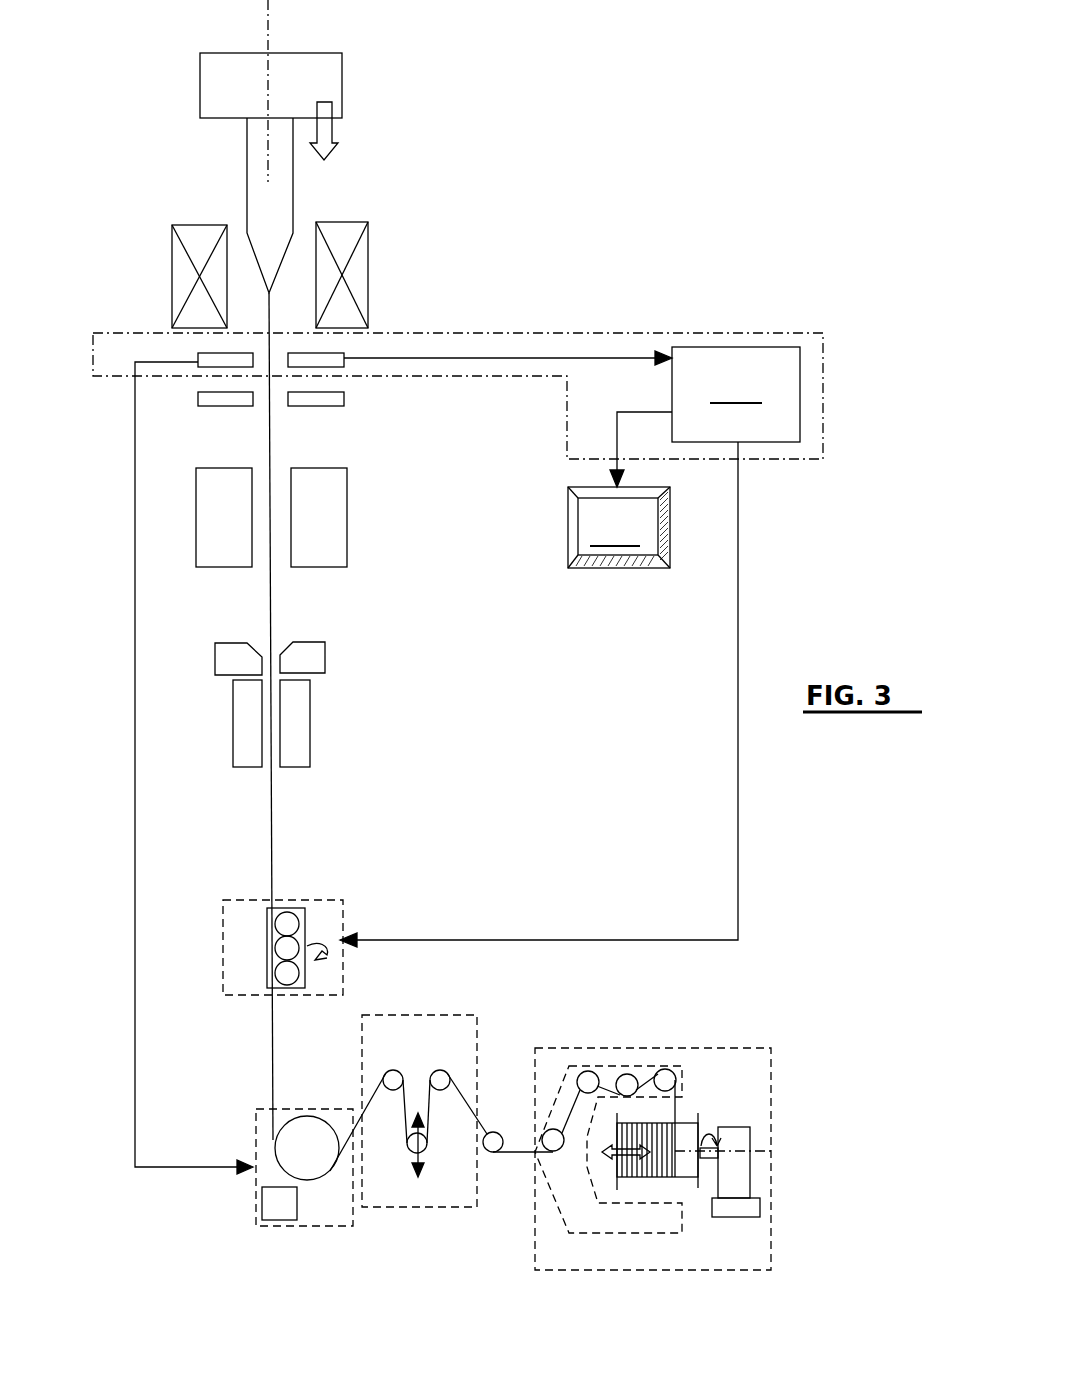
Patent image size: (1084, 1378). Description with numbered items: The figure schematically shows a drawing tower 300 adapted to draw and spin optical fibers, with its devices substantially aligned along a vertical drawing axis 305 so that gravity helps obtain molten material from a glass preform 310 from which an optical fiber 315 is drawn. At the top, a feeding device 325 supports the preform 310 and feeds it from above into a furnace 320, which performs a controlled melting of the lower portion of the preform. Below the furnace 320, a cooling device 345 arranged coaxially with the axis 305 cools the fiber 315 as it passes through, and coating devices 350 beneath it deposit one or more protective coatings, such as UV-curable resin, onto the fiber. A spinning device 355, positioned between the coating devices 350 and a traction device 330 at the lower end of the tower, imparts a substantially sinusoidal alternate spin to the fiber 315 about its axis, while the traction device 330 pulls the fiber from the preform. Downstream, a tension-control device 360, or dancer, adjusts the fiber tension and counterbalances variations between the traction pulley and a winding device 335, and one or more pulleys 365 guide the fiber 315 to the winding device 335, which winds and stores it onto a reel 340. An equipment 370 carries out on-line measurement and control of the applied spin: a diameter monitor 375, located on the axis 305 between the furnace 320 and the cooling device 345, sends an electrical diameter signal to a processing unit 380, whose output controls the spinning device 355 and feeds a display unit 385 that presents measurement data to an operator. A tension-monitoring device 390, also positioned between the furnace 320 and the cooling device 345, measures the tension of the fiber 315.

The drawing tower 300 is at (774, 145).
The vertical drawing axis 305 is at (268, 25).
The glass preform 310 is at (272, 205).
The optical fiber 315 is at (272, 445).
The furnace 320 is at (357, 292).
The feeding device 325 is at (340, 85).
The traction device 330 is at (256, 1109).
The winding device 335 is at (753, 1048).
The reel 340 is at (692, 1170).
The cooling device 345 is at (347, 507).
The coating devices 350 is at (327, 665).
The spinning device 355 is at (330, 900).
The tension-control device 360 is at (477, 1050).
The pulleys 365 is at (492, 1142).
The equipment 370 is at (458, 357).
The diameter monitor 375 is at (342, 366).
The processing unit 380 is at (570, 647).
The display unit 385 is at (619, 527).
The tension-monitoring device 390 is at (237, 407).